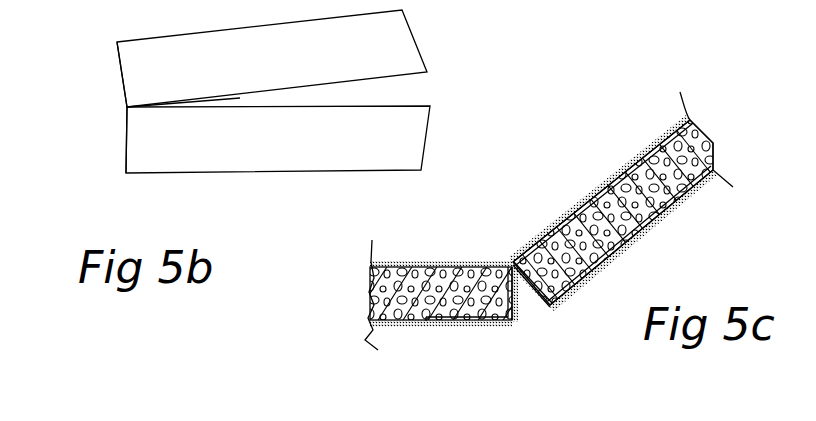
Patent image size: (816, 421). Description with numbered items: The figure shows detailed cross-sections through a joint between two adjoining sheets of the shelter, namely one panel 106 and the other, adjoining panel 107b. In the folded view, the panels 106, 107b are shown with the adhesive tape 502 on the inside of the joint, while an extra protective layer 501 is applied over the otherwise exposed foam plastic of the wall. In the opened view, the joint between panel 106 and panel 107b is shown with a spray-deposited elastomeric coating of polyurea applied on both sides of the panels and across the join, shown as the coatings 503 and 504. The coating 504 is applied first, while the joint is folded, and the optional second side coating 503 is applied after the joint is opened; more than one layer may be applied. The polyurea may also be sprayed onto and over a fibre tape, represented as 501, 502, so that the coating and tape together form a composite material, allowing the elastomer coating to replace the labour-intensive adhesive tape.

In FIG. 5B, the panel 106 is at (246, 173).
In FIG. 5C, the panel 106 is at (418, 262).
In FIG. 5B, the adjoining panel 107b is at (185, 33).
In FIG. 5C, the adjoining panel 107b is at (647, 156).
In FIG. 5B, the protective layer 501 is at (122, 80).
In FIG. 5C, the protective layer 501 is at (532, 303).
In FIG. 5B, the adhesive tape 502 is at (208, 97).
In FIG. 5C, the adhesive tape 502 is at (455, 323).
In FIG. 5C, the second side coating 503 is at (560, 217).
In FIG. 5C, the coating 504 is at (687, 198).